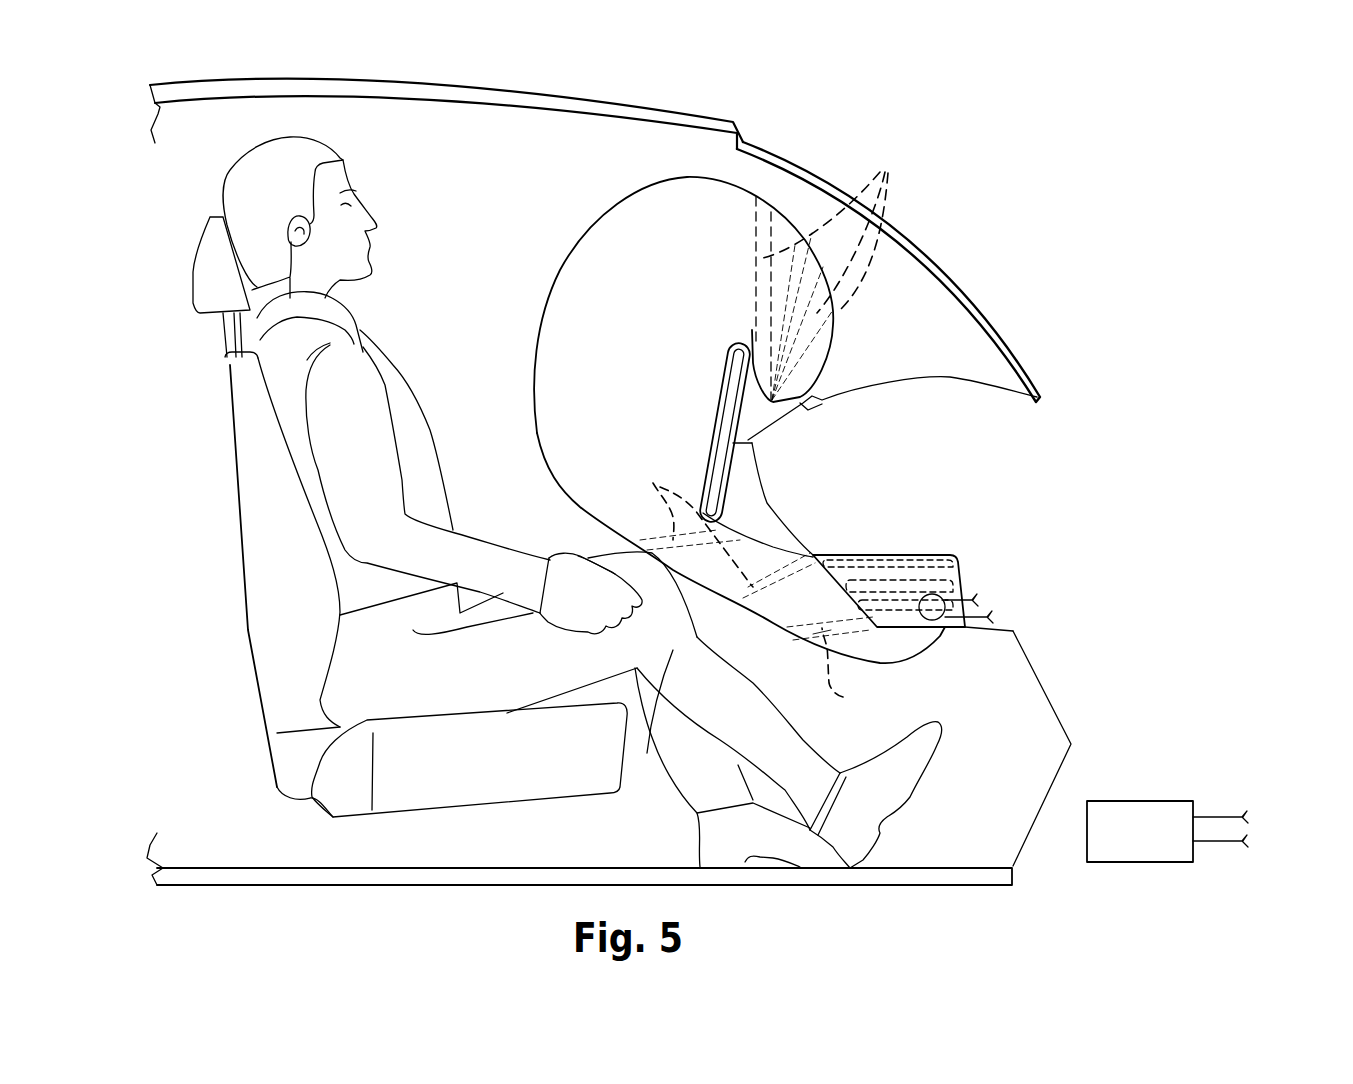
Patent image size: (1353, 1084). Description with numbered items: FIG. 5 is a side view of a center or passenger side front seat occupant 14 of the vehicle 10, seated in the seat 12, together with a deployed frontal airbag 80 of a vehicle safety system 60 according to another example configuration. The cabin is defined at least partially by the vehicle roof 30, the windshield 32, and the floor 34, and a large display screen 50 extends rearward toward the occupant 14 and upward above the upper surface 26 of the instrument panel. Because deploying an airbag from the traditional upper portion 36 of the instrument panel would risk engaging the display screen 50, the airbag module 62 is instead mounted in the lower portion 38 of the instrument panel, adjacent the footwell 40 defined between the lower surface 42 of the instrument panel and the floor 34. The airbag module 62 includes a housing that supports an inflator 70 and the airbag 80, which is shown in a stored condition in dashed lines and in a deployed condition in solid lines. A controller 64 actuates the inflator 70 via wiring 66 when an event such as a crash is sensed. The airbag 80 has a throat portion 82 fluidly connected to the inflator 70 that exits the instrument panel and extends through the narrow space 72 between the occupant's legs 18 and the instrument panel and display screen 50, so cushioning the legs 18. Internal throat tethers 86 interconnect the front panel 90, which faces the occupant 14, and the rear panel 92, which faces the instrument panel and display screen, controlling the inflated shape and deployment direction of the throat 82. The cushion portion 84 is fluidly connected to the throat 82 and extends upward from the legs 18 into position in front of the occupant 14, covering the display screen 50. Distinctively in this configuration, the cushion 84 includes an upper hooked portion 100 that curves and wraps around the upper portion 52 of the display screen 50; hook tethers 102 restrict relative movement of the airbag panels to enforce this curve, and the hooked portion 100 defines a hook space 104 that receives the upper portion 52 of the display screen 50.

The vehicle 10 is at (828, 126).
The seat 12 is at (283, 585).
The occupant 14 is at (375, 365).
The occupant's legs 18 is at (677, 720).
The upper surface of the instrument panel 26 is at (872, 387).
The vehicle roof 30 is at (455, 93).
The windshield 32 is at (965, 297).
The floor 34 is at (390, 873).
The upper portion of the instrument panel 36 is at (910, 403).
The lower portion of the instrument panel 38 is at (988, 627).
The footwell 40 is at (1017, 750).
The lower surface of the instrument panel 42 is at (1016, 662).
The display screen 50 is at (735, 400).
The upper portion of the display screen 52 is at (741, 352).
The vehicle safety system 60 is at (1046, 452).
The airbag module 62 is at (930, 513).
The controller 64 is at (940, 553).
The wiring 66 is at (992, 617).
The inflator 70 is at (940, 593).
The narrow space 72 is at (735, 627).
The frontal airbag 80 is at (727, 237).
The throat portion 82 is at (757, 553).
The cushion portion 84 is at (580, 293).
The throat tethers 86 is at (755, 589).
The front panel 90 is at (536, 351).
The rear panel 92 is at (723, 430).
The upper hooked portion 100 is at (808, 373).
The hook tethers 102 is at (845, 230).
The hook space 104 is at (758, 407).